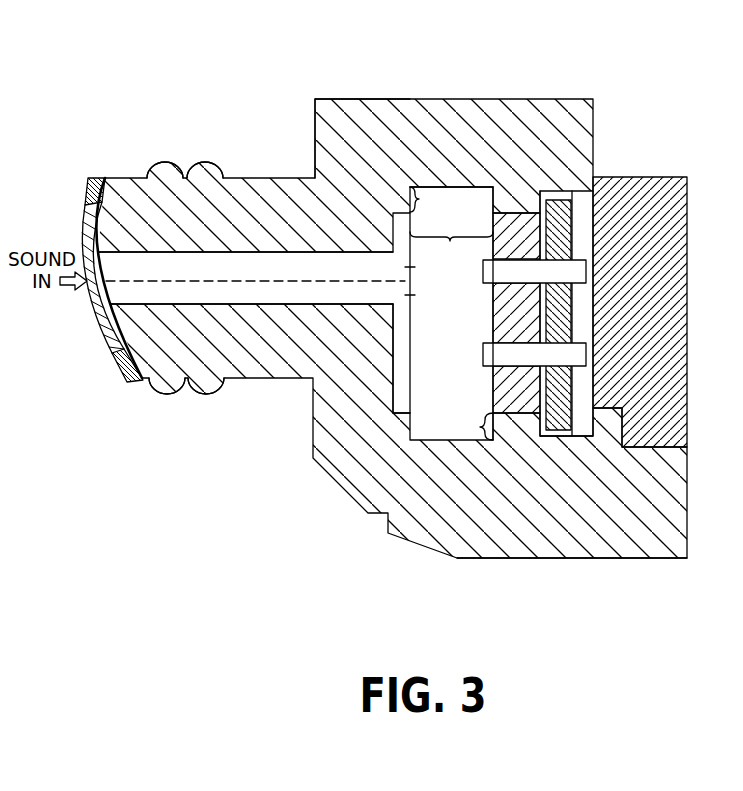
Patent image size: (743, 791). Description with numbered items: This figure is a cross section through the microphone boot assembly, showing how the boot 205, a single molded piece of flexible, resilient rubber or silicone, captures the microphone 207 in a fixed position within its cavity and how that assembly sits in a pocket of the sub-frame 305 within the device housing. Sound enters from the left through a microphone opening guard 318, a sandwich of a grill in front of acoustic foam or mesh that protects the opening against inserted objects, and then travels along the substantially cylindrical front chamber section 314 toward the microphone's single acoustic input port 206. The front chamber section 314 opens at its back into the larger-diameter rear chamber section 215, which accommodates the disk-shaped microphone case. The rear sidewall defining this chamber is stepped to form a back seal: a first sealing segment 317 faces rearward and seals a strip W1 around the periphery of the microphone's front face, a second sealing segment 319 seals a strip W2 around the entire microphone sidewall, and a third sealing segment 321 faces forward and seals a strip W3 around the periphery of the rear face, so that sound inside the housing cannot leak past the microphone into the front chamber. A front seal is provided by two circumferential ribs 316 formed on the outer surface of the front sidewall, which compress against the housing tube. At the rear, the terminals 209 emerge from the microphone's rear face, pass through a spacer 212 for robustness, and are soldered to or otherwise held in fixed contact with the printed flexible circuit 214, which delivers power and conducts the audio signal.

The boot 205 is at (580, 106).
The acoustic input port 206 is at (340, 217).
The microphone 207 is at (458, 203).
The terminals 209 is at (605, 318).
The spacer 212 is at (513, 413).
The printed flexible circuit 214 is at (572, 204).
The rear chamber section 215 is at (393, 413).
The sub-frame 305 is at (540, 542).
The front chamber section 314 is at (262, 280).
The circumferential ribs 316 is at (145, 148).
The first sealing segment 317 is at (370, 165).
The microphone opening guard 318 is at (100, 338).
The second sealing segment 319 is at (435, 187).
The third sealing segment 321 is at (495, 195).
The front face sealing strip W1 is at (432, 200).
The sidewall sealing strip W2 is at (449, 263).
The rear face sealing strip W3 is at (468, 426).